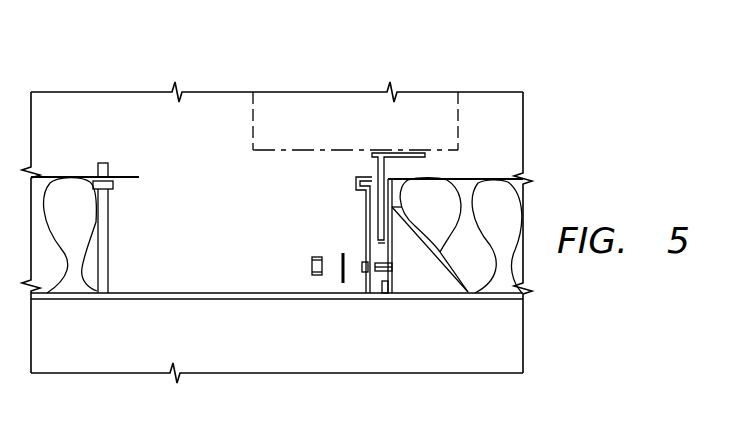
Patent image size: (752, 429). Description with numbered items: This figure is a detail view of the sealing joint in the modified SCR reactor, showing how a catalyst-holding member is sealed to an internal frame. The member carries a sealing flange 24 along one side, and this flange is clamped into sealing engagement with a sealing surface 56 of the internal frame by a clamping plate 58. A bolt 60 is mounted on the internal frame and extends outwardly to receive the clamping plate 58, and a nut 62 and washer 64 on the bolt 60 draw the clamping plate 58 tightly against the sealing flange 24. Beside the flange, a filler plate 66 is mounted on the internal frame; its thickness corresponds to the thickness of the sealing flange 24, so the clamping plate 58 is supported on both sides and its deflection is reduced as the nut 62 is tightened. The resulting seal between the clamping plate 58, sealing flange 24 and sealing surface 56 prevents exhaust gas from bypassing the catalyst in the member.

The sealing flange 24 is at (406, 152).
The sealing surface 56 is at (388, 233).
The clamping plate 58 is at (366, 199).
The bolt 60 is at (392, 270).
The nut 62 is at (315, 256).
The washer 64 is at (342, 284).
The filler plate 66 is at (386, 294).